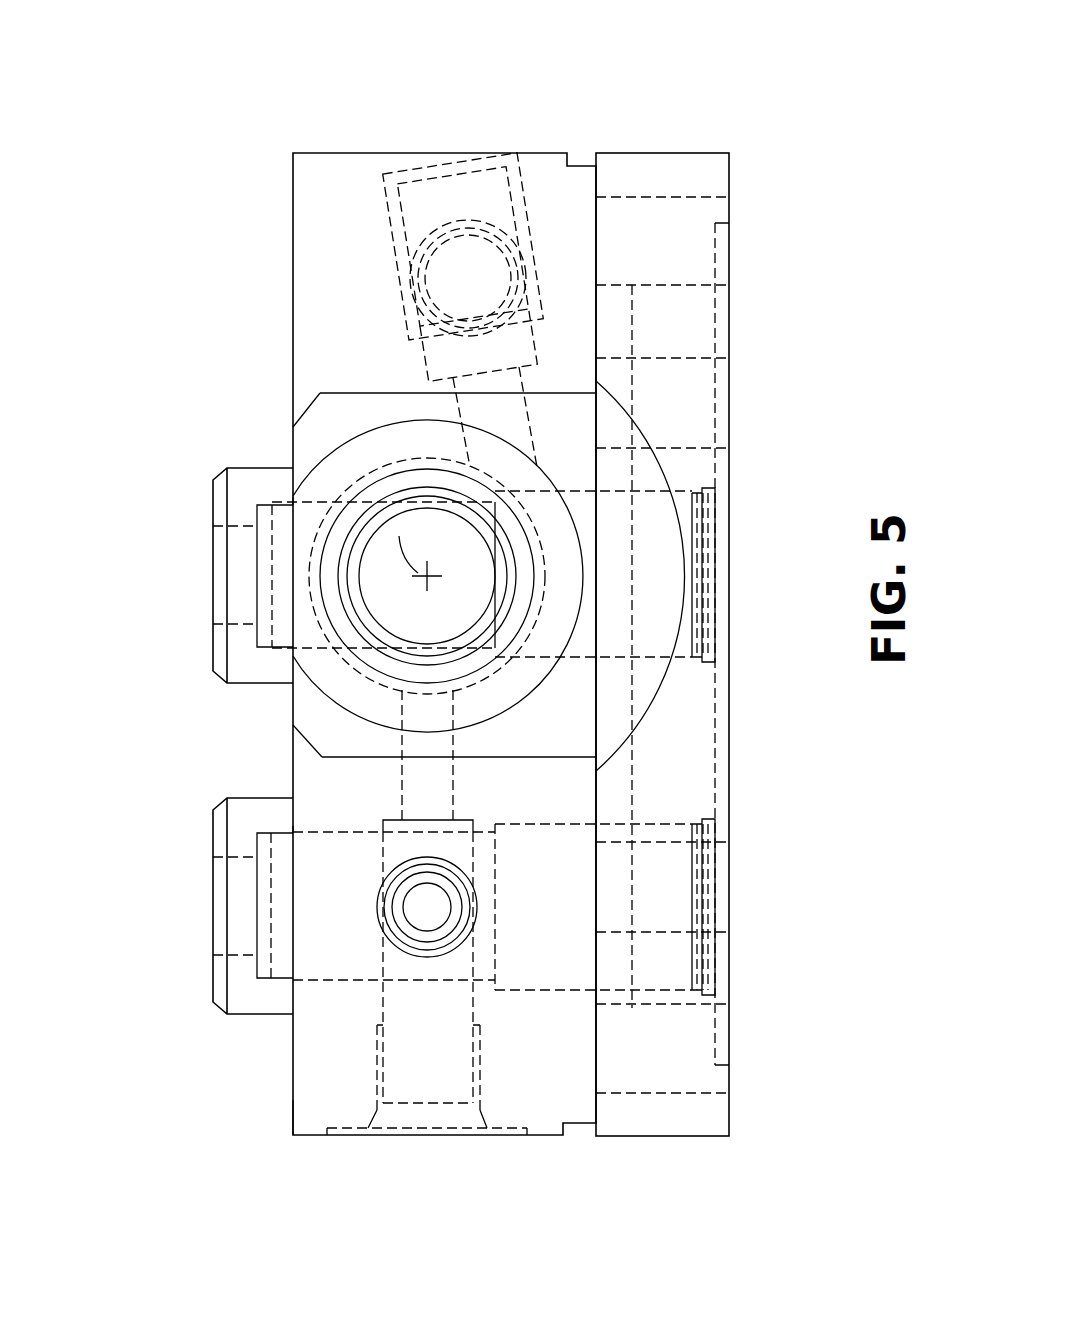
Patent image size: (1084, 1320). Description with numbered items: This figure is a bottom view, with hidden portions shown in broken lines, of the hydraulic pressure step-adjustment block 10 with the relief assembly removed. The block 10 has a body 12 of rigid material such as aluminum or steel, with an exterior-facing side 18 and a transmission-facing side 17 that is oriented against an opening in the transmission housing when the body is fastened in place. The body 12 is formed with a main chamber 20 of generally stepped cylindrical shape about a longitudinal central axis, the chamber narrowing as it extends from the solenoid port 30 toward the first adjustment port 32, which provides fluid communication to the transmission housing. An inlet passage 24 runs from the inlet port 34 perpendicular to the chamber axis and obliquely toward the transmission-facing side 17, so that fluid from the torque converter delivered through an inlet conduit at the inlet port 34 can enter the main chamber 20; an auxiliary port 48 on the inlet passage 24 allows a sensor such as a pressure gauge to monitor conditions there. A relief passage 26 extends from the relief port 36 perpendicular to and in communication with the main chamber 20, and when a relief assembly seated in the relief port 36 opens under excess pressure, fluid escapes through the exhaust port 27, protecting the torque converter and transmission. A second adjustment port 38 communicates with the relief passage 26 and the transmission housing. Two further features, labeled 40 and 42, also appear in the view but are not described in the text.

The hydraulic pressure step-adjustment block 10 is at (186, 169).
The body 12 is at (530, 146).
The transmission-facing side 17 is at (729, 180).
The exterior-facing side 18 is at (293, 1100).
The main chamber 20 is at (373, 477).
The inlet passage 24 is at (453, 409).
The relief passage 26 is at (400, 782).
The exhaust port 27 is at (470, 896).
The solenoid port 30 is at (527, 540).
The first adjustment port 32 is at (283, 507).
The inlet port 34 is at (397, 177).
The relief port 36 is at (385, 1082).
The second adjustment port 38 is at (283, 837).
The clamp block 40 is at (213, 630).
The clamp insert 42 is at (228, 540).
The auxiliary port 48 is at (448, 247).